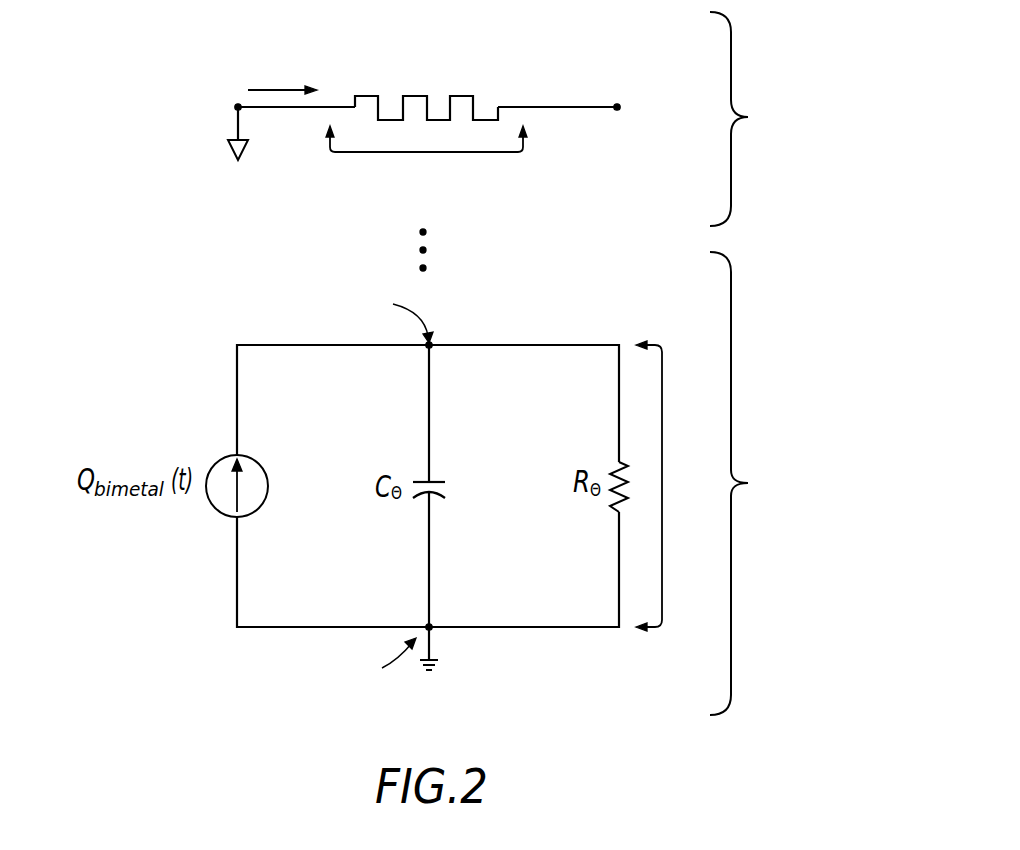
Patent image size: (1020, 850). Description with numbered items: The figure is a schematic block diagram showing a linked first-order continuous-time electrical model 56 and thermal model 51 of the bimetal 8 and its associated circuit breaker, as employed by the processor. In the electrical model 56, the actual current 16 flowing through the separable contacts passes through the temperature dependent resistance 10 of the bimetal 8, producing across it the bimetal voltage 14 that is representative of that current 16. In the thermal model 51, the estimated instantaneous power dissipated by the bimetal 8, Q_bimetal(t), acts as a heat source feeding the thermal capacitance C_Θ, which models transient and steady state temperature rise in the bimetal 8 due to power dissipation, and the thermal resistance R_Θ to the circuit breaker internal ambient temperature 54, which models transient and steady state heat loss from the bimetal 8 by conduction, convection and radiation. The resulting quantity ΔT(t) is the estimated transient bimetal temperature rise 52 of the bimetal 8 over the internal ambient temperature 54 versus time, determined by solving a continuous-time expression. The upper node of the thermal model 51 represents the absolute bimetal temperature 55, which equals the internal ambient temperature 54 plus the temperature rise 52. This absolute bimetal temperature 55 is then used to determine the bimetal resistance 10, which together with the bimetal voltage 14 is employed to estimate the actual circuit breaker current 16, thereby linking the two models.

The bimetal 8 is at (473, 97).
The temperature dependent resistance 10 is at (487, 70).
The voltage 14 is at (483, 196).
The current 16 is at (240, 53).
The thermal model 51 is at (830, 498).
The transient bimetal temperature rise 52 is at (691, 452).
The circuit breaker internal ambient temperature 54 is at (377, 692).
The absolute bimetal temperature 55 is at (63, 284).
The electrical model 56 is at (846, 133).